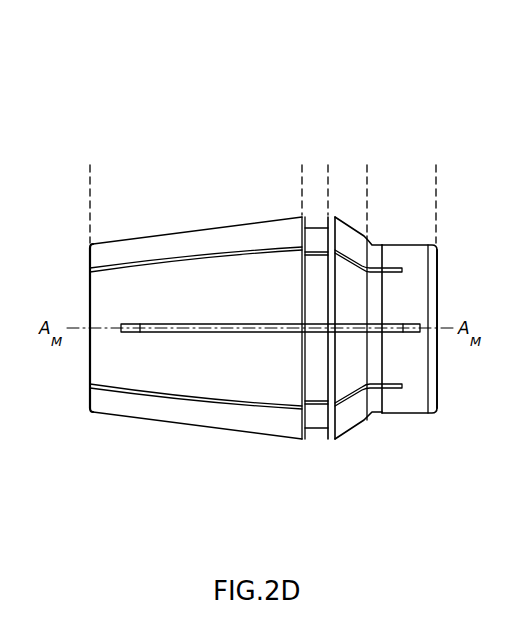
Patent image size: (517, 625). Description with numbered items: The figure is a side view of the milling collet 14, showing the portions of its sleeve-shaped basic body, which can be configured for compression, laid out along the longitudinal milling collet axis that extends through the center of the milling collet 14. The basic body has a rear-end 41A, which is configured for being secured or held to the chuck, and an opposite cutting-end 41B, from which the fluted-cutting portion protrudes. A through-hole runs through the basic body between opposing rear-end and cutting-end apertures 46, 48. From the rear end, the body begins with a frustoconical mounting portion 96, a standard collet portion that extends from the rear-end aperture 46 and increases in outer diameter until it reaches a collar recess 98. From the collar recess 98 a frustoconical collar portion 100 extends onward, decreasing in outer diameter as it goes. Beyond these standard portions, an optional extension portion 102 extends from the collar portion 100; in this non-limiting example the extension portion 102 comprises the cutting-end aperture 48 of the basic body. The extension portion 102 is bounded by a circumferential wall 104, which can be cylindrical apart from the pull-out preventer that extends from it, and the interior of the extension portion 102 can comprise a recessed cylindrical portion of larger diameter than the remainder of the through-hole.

The milling collet 14 is at (427, 71).
The rear-end aperture 46 is at (67, 301).
The cutting-end aperture 48 is at (451, 261).
The rear-end 41A is at (395, 494).
The cutting-end 41B is at (105, 446).
The frustoconical mounting portion 96 is at (302, 166).
The collar recess 98 is at (328, 166).
The frustoconical collar portion 100 is at (367, 166).
The extension portion 102 is at (436, 166).
The circumferential wall 104 is at (423, 426).